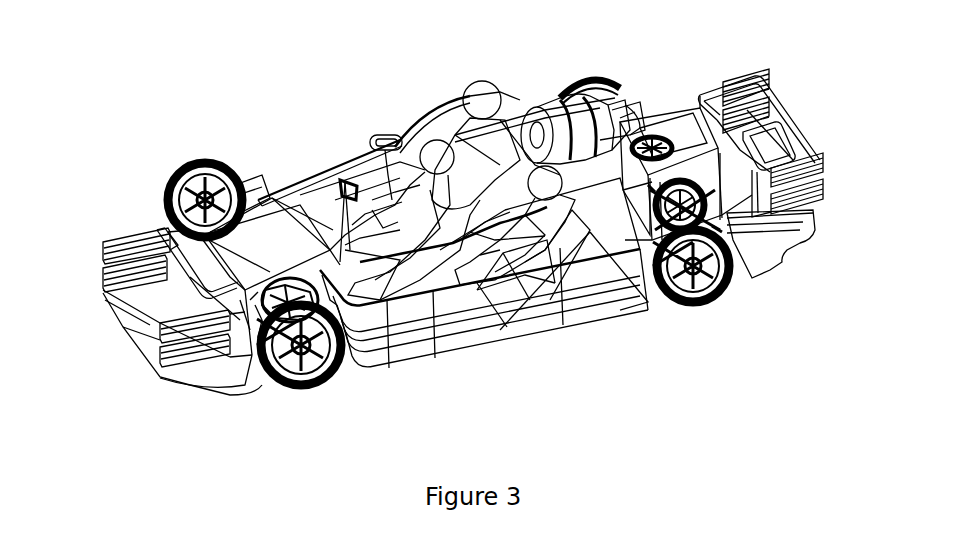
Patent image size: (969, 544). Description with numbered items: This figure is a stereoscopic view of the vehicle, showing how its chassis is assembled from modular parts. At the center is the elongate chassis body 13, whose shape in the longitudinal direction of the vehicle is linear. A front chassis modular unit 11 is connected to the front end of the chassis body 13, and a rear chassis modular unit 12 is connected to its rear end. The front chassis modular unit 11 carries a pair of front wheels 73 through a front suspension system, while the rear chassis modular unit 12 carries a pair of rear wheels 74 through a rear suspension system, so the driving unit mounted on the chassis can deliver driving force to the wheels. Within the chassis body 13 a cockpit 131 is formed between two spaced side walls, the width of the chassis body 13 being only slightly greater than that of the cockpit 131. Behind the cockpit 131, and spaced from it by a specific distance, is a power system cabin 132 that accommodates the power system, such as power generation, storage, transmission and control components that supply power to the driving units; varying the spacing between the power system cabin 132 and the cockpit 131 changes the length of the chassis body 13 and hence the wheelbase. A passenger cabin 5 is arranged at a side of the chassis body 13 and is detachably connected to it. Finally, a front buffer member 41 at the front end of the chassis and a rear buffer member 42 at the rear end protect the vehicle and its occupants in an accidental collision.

The passenger cabin 5 is at (433, 318).
The front chassis modular unit 11 is at (282, 205).
The rear chassis modular unit 12 is at (692, 100).
The chassis body 13 is at (483, 175).
The cockpit 131 is at (386, 134).
The power system cabin 132 is at (575, 120).
The front buffer member 41 is at (103, 242).
The rear buffer member 42 is at (770, 92).
The front wheels 73 is at (300, 392).
The rear wheels 74 is at (703, 303).